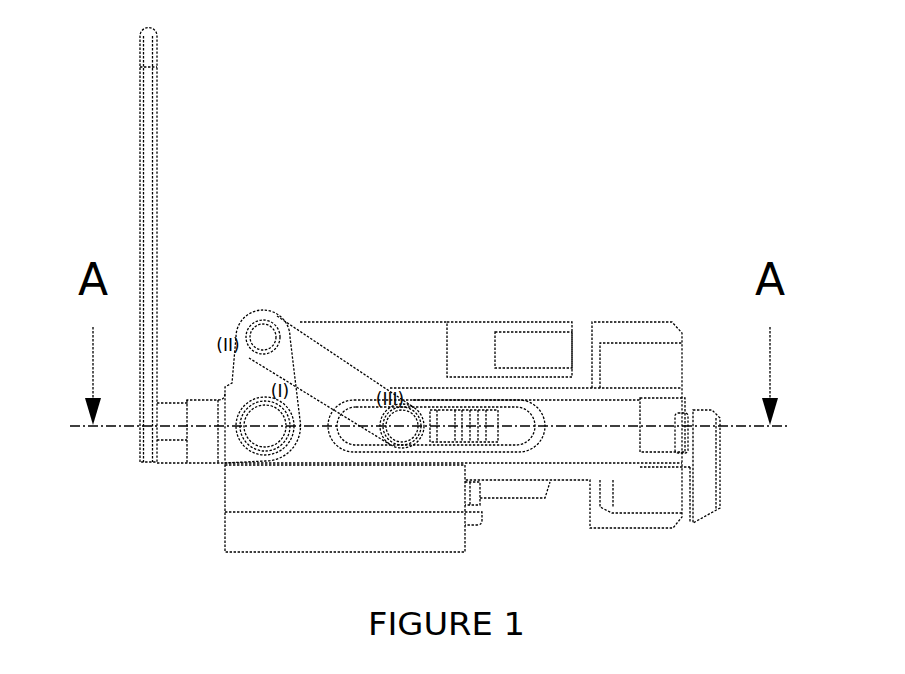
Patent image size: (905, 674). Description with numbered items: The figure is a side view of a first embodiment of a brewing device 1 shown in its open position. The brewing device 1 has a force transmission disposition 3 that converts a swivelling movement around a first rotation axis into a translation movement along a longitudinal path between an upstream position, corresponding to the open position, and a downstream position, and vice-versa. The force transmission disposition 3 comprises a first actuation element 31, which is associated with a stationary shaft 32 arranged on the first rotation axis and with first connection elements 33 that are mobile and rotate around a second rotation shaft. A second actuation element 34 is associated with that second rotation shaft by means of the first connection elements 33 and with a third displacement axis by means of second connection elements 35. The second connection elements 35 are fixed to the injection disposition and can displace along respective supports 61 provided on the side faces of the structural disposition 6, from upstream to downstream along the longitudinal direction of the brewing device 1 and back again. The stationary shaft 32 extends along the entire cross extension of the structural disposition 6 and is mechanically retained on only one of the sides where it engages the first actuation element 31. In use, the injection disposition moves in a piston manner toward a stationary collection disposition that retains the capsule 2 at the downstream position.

The brewing device 1 is at (420, 225).
The capsule 2 is at (519, 507).
The force transmission disposition 3 is at (263, 317).
The structural disposition 6 is at (439, 319).
The first actuation element 31 is at (175, 245).
The stationary shaft 32 is at (264, 441).
The first connection elements 33 is at (267, 327).
The second actuation element 34 is at (331, 380).
The second connection elements 35 is at (404, 443).
The supports 61 is at (457, 424).